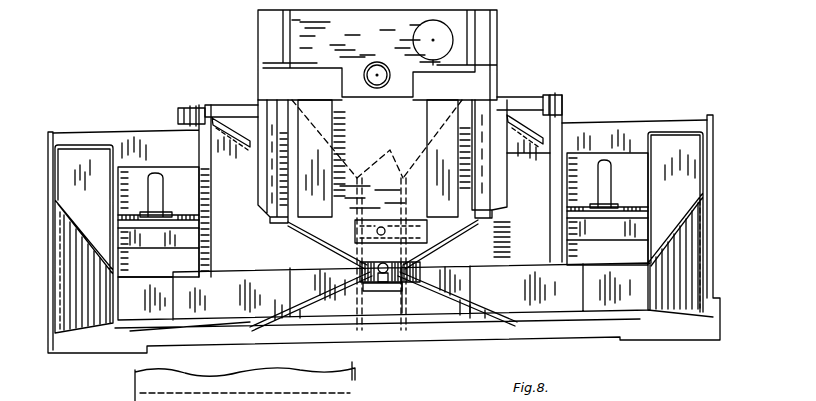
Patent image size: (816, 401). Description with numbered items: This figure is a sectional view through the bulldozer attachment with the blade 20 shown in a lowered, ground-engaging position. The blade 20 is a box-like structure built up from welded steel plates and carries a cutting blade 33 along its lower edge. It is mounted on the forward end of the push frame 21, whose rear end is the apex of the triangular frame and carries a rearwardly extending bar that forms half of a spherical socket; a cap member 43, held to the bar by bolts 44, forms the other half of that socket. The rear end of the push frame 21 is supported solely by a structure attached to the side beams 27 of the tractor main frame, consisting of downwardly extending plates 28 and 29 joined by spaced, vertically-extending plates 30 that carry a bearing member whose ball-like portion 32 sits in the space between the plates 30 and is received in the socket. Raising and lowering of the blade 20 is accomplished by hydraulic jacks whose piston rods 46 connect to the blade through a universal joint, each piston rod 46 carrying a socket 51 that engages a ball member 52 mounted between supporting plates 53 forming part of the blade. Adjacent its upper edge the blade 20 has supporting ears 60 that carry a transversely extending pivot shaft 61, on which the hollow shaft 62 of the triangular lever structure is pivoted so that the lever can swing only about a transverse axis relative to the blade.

The blade 20 is at (652, 120).
The push frame 21 is at (137, 305).
The side beams 27 is at (262, 111).
The downwardly extending plates 28 is at (320, 240).
The downwardly extending plates 29 is at (348, 139).
The vertically-extending plates 30 is at (398, 170).
The ball-like portion 32 is at (408, 236).
The cutting blade 33 is at (386, 337).
The cap member 43 is at (395, 268).
The bolts 44 is at (390, 278).
The piston rod 46 is at (162, 176).
The socket 51 is at (150, 216).
The ball member 52 is at (150, 240).
The supporting plates 53 is at (118, 229).
The supporting ears 60 is at (203, 147).
The pivot shaft 61 is at (565, 105).
The hollow shaft 62 is at (523, 103).